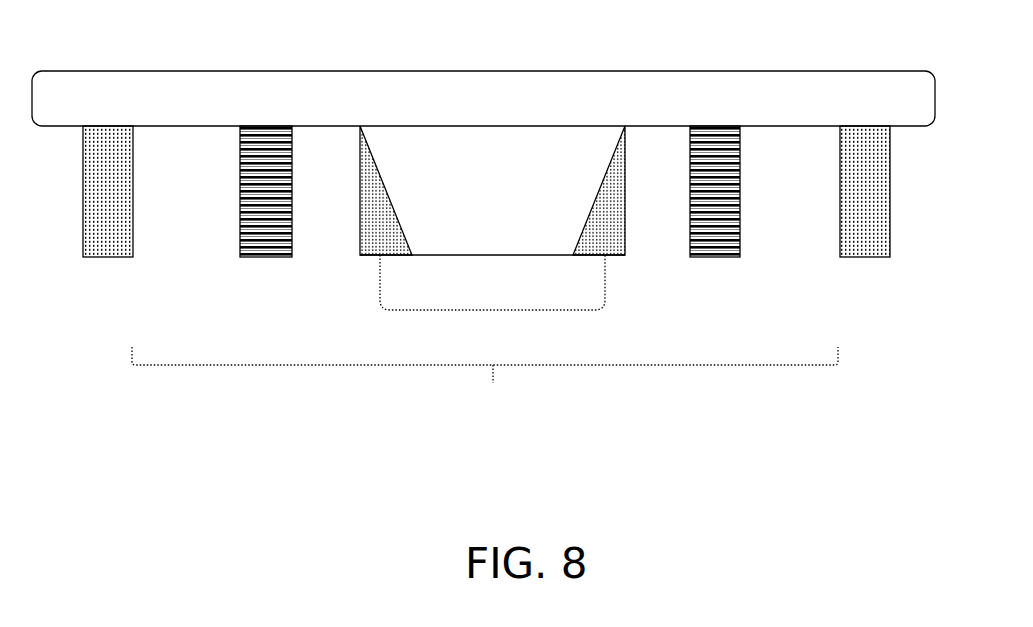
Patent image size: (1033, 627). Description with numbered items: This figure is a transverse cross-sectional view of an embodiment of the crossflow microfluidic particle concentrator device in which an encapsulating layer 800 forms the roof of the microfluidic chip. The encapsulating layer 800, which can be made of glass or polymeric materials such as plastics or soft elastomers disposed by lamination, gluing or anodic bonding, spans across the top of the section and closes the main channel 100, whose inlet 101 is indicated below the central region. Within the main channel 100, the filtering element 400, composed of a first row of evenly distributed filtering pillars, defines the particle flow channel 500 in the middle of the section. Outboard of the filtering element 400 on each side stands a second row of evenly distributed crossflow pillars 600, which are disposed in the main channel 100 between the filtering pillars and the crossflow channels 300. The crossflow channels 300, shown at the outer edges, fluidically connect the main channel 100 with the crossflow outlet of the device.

The main channel 100 is at (485, 384).
The inlet 101 is at (492, 282).
The crossflow channels 300 is at (491, 191).
The filtering element 400 is at (370, 240).
The particle flow channel 500 is at (492, 218).
The crossflow pillars 600 is at (690, 156).
The encapsulating layer 800 is at (483, 98).